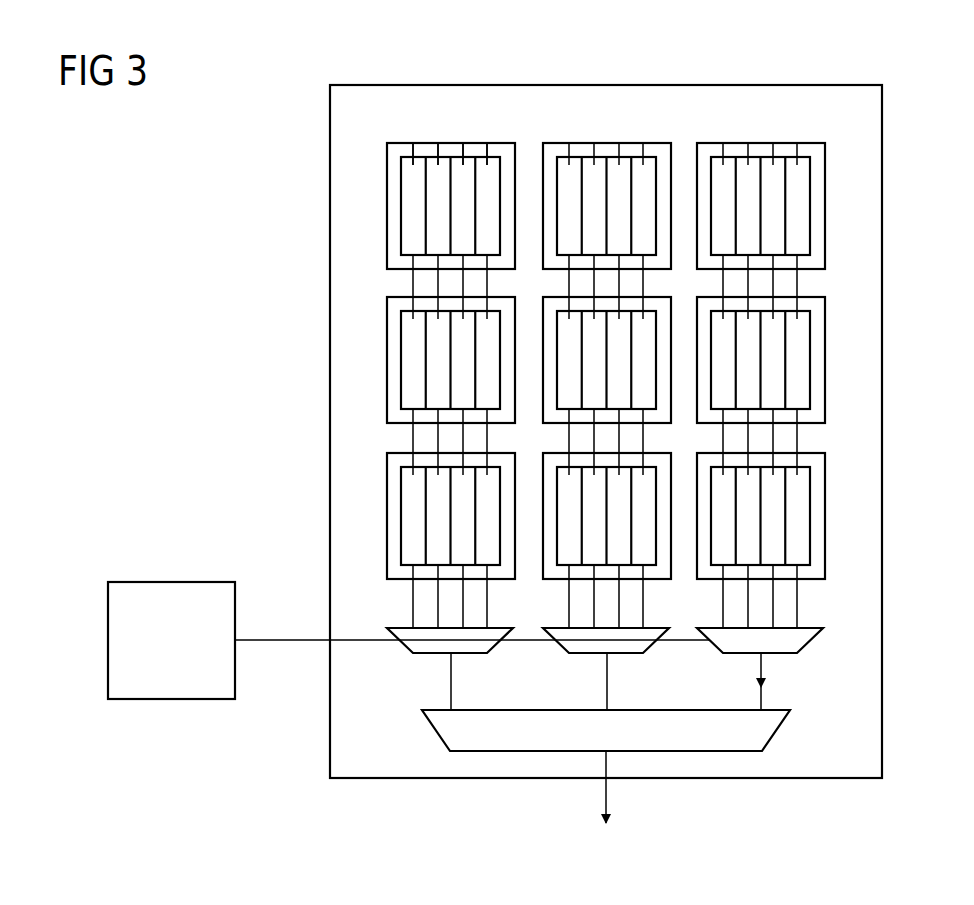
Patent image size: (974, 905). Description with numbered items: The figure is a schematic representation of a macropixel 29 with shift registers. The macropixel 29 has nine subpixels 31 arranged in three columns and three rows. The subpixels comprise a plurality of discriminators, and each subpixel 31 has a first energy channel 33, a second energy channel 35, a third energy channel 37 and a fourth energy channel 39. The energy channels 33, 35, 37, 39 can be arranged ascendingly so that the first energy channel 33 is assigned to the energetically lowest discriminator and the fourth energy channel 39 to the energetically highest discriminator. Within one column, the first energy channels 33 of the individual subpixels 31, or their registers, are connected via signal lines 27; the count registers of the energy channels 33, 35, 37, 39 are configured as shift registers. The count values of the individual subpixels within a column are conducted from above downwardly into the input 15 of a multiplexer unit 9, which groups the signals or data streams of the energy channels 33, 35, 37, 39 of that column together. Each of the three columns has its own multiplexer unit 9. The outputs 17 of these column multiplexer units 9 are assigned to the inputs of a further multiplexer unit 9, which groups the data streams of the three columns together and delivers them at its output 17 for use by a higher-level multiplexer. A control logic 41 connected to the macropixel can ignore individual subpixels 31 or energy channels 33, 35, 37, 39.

The multiplexer unit 9 is at (812, 640).
The input 15 is at (438, 604).
The output 17 is at (451, 668).
The signal line 27 is at (438, 282).
The macropixel 29 is at (808, 72).
The subpixel 31 is at (825, 205).
The first energy channel 33 is at (413, 143).
The second energy channel 35 is at (438, 143).
The third energy channel 37 is at (463, 143).
The fourth energy channel 39 is at (487, 143).
The control logic 41 is at (176, 582).